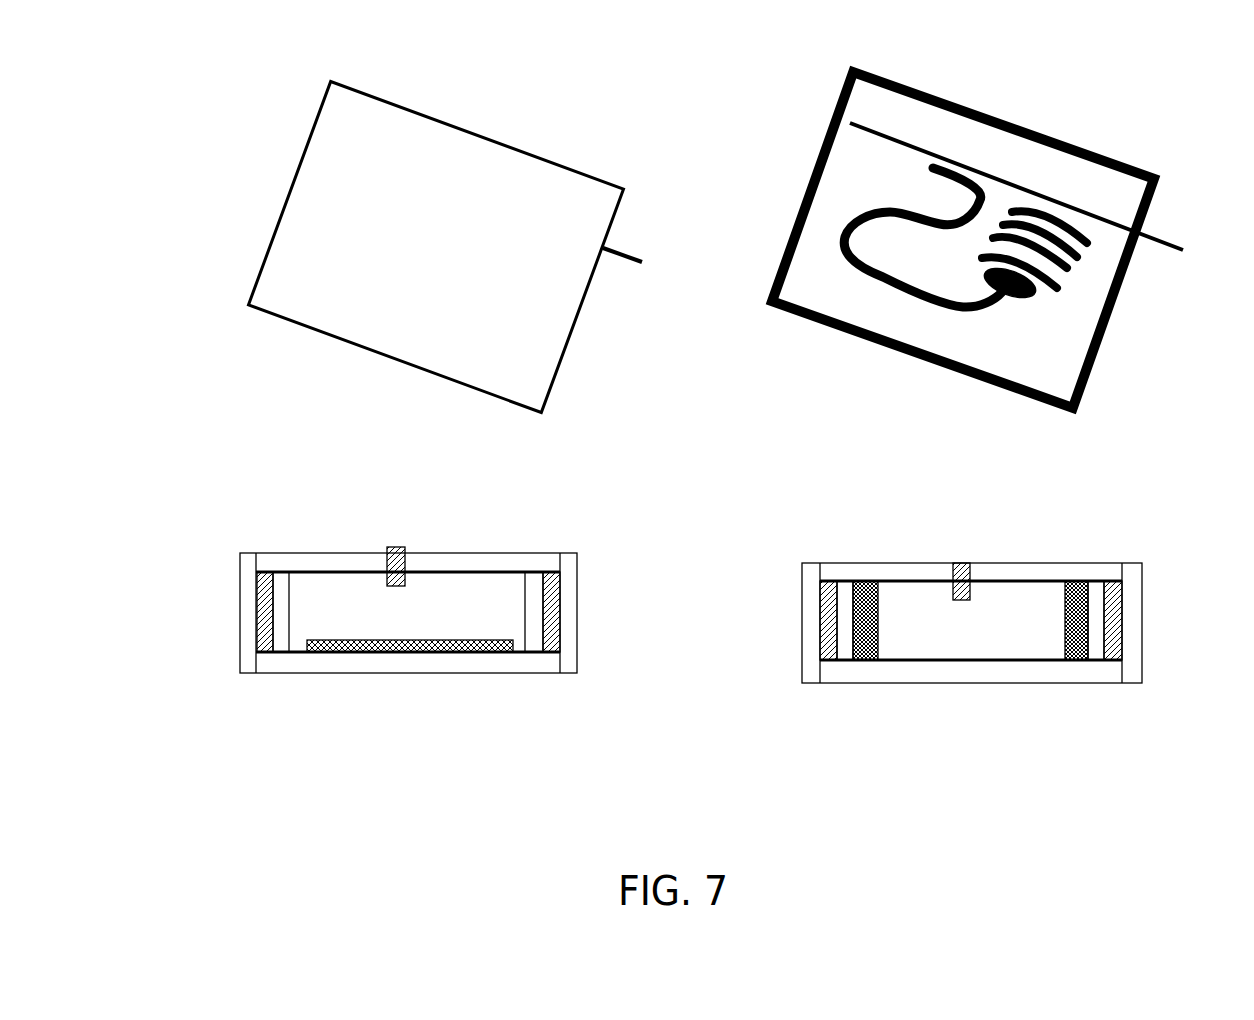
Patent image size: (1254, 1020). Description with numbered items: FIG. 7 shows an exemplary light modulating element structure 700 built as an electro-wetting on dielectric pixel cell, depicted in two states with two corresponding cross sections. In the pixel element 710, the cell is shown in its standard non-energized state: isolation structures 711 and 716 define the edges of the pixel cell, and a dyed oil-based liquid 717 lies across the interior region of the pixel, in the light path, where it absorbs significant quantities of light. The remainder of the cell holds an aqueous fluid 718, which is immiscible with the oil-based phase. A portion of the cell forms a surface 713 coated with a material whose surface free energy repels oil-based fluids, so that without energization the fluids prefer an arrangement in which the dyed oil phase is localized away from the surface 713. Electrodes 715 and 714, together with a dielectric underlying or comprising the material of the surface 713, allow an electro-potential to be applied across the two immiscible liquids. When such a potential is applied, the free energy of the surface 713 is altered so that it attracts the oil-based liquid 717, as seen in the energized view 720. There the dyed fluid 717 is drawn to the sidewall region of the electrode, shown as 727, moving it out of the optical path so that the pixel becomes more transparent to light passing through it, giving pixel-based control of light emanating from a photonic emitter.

The electronic device 700 is at (227, 110).
The pixel element 710 is at (372, 414).
The pixel element in energized state 720 is at (928, 427).
The isolation structure 711 is at (247, 580).
The coated surface 713 is at (282, 637).
The electrode 714 is at (265, 632).
The electrode 715 is at (413, 553).
The isolation structure 716 is at (567, 580).
The oil-based liquid 717 is at (512, 653).
The aqueous fluid 718 is at (395, 607).
The sidewall region of the electrode 727 is at (865, 643).